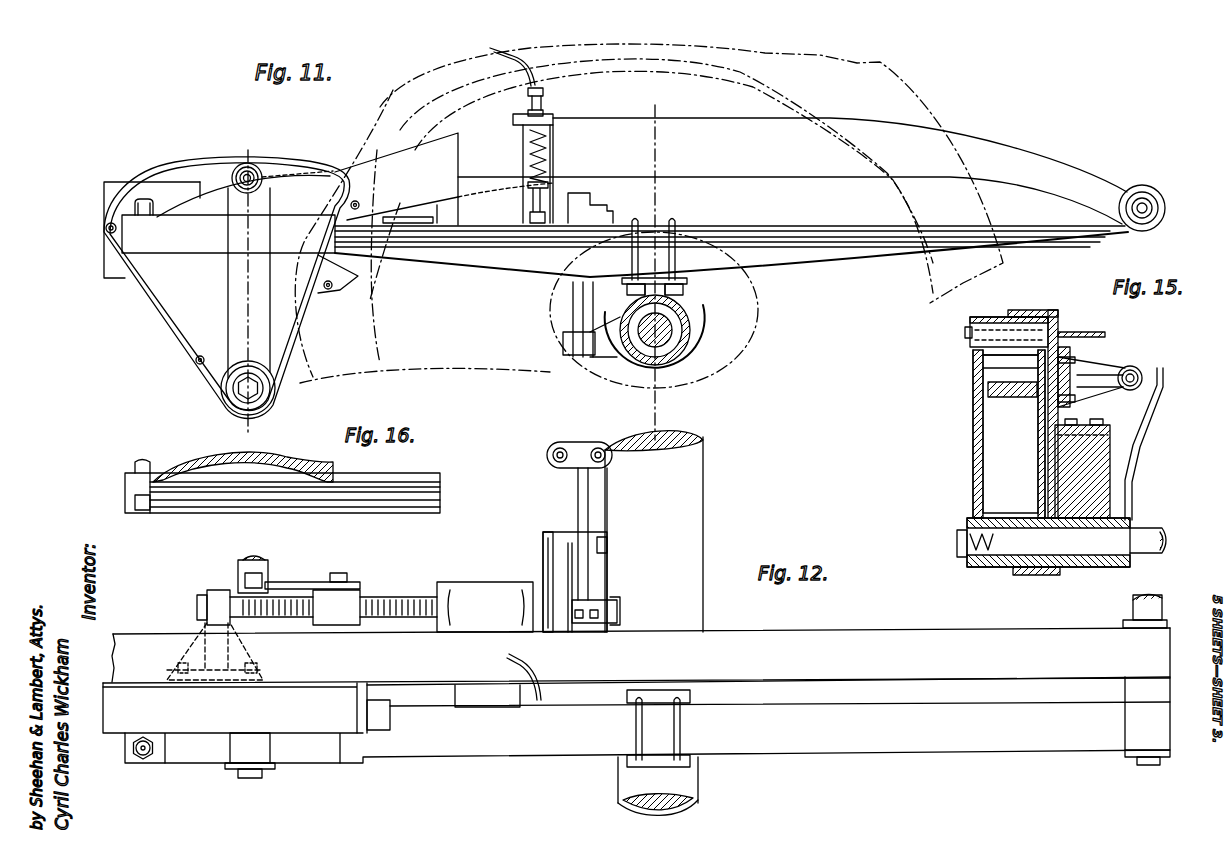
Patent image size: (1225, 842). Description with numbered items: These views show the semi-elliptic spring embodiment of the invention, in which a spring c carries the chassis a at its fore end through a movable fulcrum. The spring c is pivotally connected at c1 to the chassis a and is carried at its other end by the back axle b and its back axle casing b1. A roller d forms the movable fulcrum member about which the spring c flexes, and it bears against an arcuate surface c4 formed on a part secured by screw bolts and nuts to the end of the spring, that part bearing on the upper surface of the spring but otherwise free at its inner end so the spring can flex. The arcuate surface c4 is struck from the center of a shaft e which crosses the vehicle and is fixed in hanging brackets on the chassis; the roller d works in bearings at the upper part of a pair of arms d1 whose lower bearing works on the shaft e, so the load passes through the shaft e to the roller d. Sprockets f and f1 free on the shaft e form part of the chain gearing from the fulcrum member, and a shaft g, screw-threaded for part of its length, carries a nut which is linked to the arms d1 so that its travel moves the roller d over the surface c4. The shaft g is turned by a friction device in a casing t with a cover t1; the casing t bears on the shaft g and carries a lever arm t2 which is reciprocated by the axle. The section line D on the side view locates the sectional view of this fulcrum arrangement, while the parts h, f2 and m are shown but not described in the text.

In FIG. 11, the chassis a is at (750, 195).
In FIG. 15, the chassis a is at (1093, 333).
In FIG. 12, the chassis a is at (783, 648).
In FIG. 11, the back axle b is at (667, 328).
In FIG. 12, the back axle b is at (677, 467).
In FIG. 11, the back axle casing b1 is at (683, 347).
In FIG. 12, the back axle casing b1 is at (658, 728).
In FIG. 11, the spring c is at (247, 388).
In FIG. 12, the spring c is at (258, 562).
In FIG. 15, the pivotal connection c1 is at (1093, 447).
In FIG. 11, the arcuate surface c4 is at (204, 196).
In FIG. 16, the arcuate surface c4 is at (293, 453).
In FIG. 15, the arcuate surface c4 is at (1002, 355).
In FIG. 12, the arcuate surface c4 is at (200, 750).
In FIG. 15, the roller d is at (1007, 333).
In FIG. 12, the roller d is at (250, 762).
In FIG. 11, the arms d1 is at (237, 313).
In FIG. 15, the arms d1 is at (1040, 462).
In FIG. 11, the section line D D is at (247, 163).
In FIG. 15, the shaft e is at (1153, 528).
In FIG. 12, the sprocket f is at (335, 610).
In FIG. 12, the sprocket f1 is at (293, 583).
In FIG. 15, the bracket arm f2 is at (1162, 405).
In FIG. 12, the bracket arm f2 is at (253, 592).
In FIG. 11, the shaft g is at (197, 227).
In FIG. 16, the shaft g is at (327, 468).
In FIG. 15, the shaft g is at (1141, 377).
In FIG. 12, the shaft g is at (407, 593).
In FIG. 11, the plate h is at (170, 340).
In FIG. 15, the plate h is at (1027, 311).
In FIG. 11, the rod m is at (516, 74).
In FIG. 12, the casing t is at (567, 537).
In FIG. 12, the cover t1 is at (550, 545).
In FIG. 12, the lever arm t2 is at (583, 478).